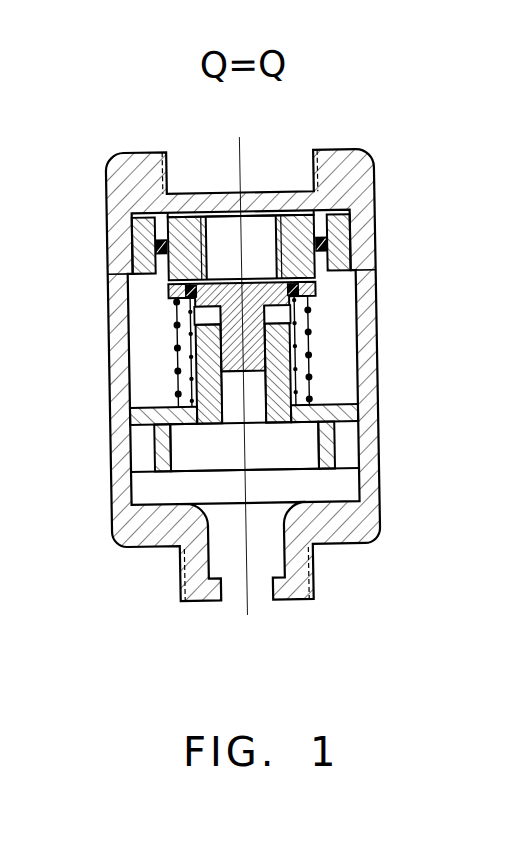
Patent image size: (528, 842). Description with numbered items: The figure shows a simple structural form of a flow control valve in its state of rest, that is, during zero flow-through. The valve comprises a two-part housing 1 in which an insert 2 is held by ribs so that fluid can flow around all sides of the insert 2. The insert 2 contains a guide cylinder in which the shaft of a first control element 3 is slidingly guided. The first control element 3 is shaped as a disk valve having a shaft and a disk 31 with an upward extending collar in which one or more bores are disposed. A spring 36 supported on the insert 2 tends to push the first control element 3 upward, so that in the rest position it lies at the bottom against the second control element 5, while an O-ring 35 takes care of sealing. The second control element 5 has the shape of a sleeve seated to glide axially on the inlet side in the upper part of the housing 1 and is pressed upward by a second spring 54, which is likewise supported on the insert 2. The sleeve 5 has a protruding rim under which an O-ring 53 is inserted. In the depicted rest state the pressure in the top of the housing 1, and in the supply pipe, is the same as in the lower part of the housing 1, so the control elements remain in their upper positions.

The housing 1 is at (368, 375).
The insert 2 is at (331, 444).
The first control element 3 is at (298, 300).
The second control element 5 is at (320, 228).
The disk 31 is at (191, 307).
The O-ring 35 is at (188, 289).
The spring 36 is at (177, 379).
The O-ring 53 is at (162, 247).
The second spring 54 is at (178, 392).